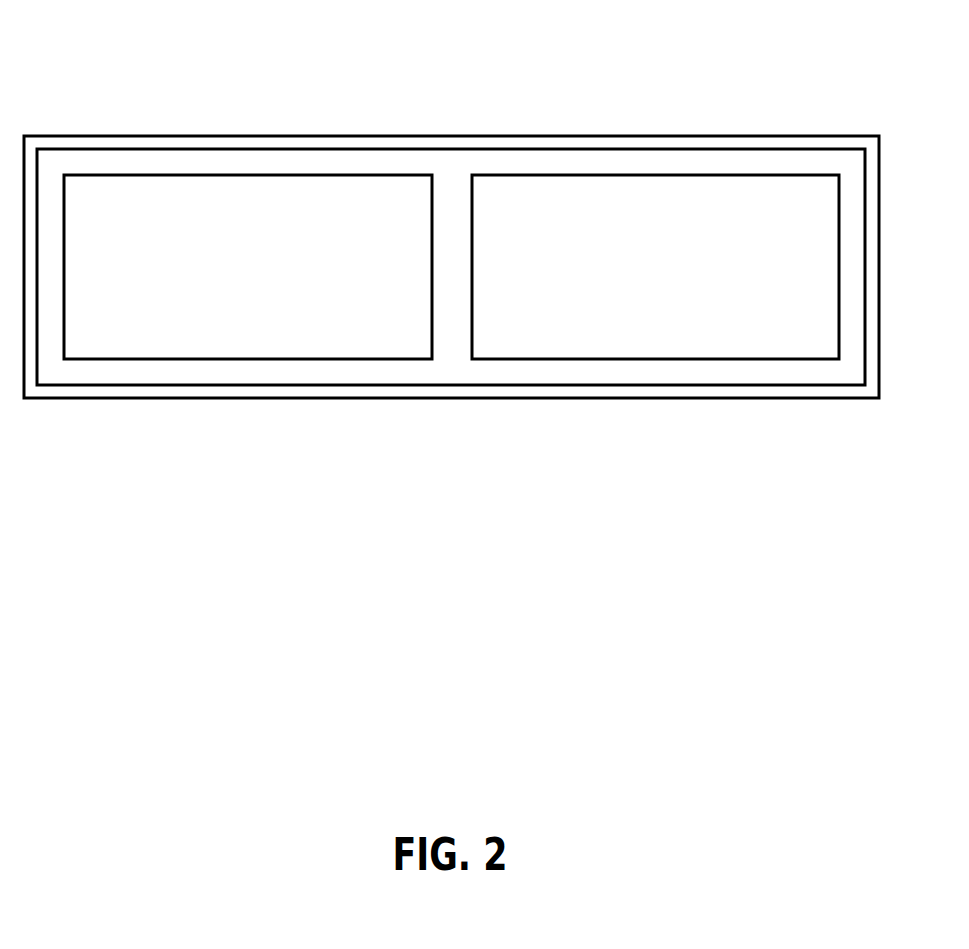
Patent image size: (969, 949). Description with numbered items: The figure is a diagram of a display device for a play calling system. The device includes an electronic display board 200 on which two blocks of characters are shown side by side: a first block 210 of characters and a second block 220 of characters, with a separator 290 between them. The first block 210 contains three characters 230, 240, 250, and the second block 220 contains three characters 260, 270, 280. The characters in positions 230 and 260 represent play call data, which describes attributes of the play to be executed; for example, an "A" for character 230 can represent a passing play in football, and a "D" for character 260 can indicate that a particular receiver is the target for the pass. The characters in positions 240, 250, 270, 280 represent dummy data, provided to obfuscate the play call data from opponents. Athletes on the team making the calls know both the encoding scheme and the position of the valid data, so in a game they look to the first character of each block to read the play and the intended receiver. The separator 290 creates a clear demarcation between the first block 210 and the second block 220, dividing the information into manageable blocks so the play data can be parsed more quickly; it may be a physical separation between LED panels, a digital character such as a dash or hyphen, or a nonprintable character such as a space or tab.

The electronic display board 200 is at (835, 389).
The first block 210 is at (248, 267).
The second block 220 is at (655, 267).
The character 230 is at (139, 202).
The character 240 is at (245, 202).
The character 250 is at (363, 202).
The character 260 is at (548, 202).
The character 270 is at (661, 203).
The character 280 is at (760, 203).
The separator 290 is at (452, 279).